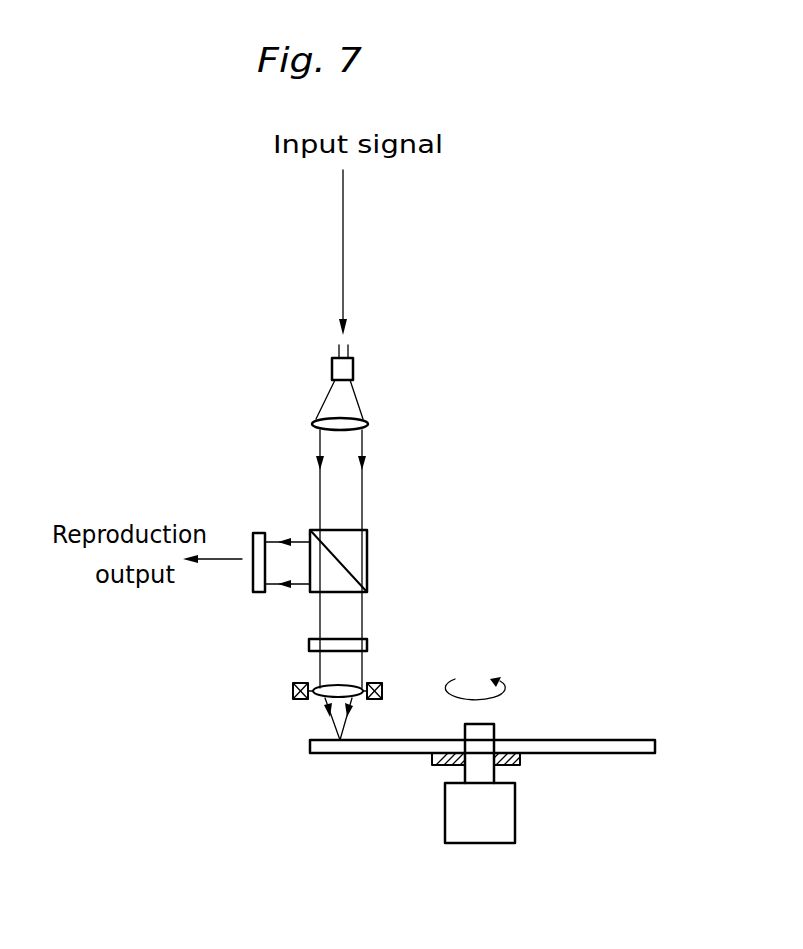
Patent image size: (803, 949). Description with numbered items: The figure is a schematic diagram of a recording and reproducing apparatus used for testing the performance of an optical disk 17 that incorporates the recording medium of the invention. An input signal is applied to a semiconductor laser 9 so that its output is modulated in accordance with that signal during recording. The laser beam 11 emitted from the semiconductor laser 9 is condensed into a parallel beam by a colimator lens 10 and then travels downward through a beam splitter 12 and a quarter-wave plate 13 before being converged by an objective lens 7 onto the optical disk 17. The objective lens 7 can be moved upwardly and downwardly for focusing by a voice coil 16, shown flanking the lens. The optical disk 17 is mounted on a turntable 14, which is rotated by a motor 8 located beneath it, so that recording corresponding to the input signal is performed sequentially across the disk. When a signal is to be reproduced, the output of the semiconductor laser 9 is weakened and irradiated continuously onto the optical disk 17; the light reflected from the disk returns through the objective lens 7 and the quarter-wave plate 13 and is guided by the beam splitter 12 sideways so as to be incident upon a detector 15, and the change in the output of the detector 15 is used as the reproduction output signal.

The objective lens 7 is at (317, 700).
The motor 8 is at (478, 845).
The semiconductor laser 9 is at (355, 367).
The colimator lens 10 is at (361, 423).
The laser beam 11 is at (363, 483).
The beam splitter 12 is at (368, 557).
The λ/4 plate 13 is at (368, 644).
The turntable 14 is at (520, 767).
The detector 15 is at (259, 533).
The voice coil 16 is at (293, 688).
The optical disk 17 is at (358, 753).